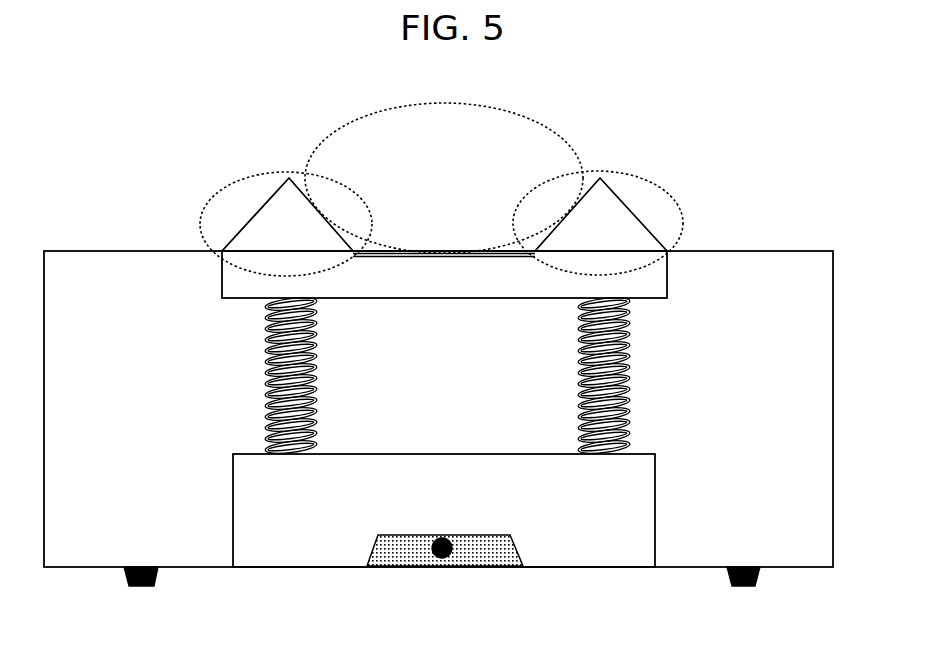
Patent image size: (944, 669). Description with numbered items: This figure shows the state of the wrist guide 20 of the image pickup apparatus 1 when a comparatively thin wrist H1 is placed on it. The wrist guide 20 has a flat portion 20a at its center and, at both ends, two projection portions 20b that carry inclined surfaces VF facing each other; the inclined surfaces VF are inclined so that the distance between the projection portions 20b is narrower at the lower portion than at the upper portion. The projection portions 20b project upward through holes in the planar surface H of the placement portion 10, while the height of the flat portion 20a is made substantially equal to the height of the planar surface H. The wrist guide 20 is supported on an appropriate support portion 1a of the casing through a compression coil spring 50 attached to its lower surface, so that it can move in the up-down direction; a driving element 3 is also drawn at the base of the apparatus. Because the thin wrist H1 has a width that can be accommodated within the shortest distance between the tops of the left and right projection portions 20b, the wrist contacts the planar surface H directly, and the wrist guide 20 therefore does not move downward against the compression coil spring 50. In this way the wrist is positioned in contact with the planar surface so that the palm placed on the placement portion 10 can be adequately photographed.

The image pickup apparatus 1 is at (112, 185).
The apparatus body 1a is at (655, 502).
The driving unit 3 is at (450, 554).
The placement portion 10 is at (745, 251).
The wrist guide 20 is at (667, 296).
The flat portion 20a is at (470, 257).
The projection portion 20b is at (243, 180).
The compression coil spring 50 is at (578, 375).
The planar surface H is at (702, 251).
The thin wrist H1 is at (568, 144).
The inclined surface VF is at (322, 210).